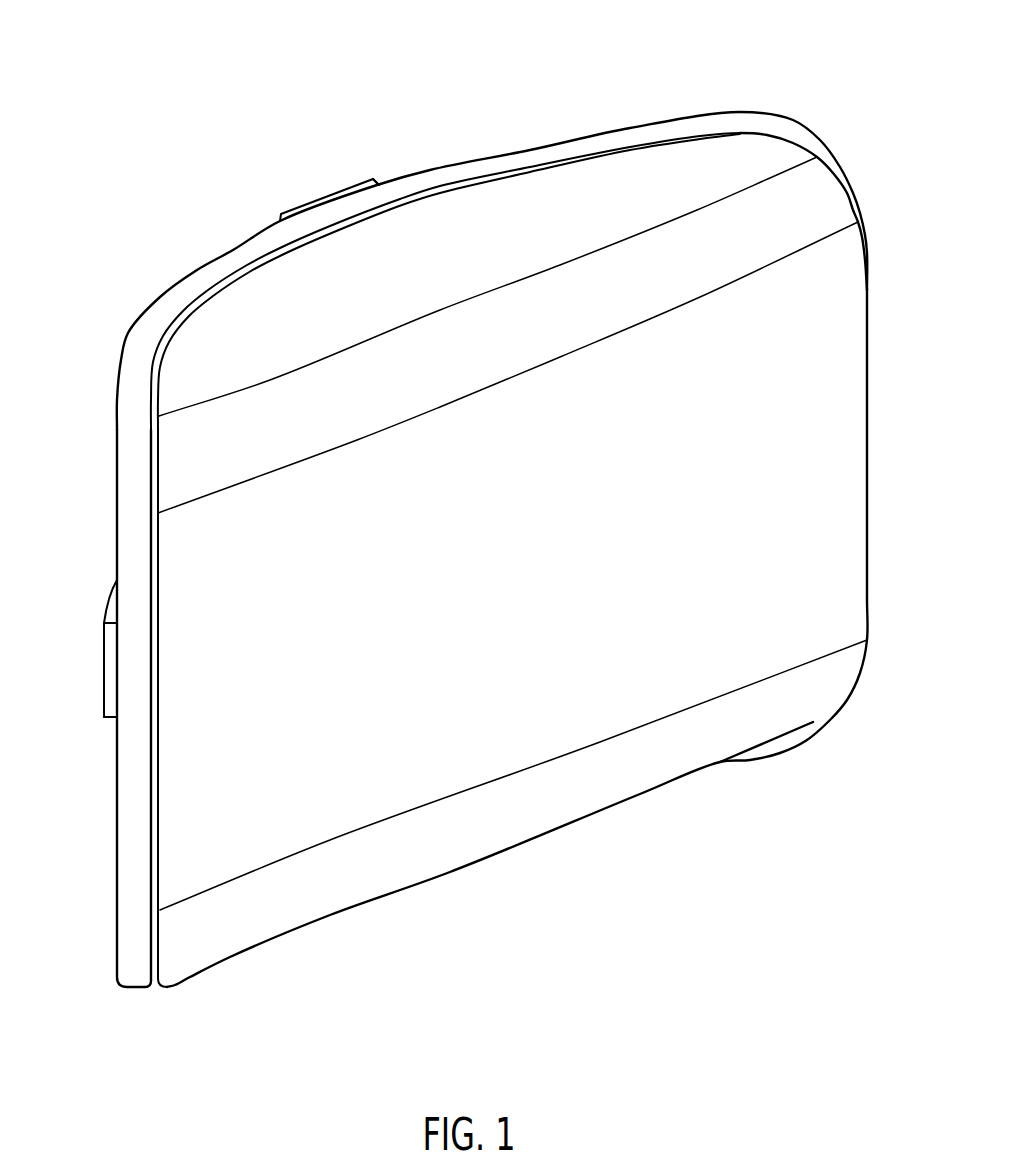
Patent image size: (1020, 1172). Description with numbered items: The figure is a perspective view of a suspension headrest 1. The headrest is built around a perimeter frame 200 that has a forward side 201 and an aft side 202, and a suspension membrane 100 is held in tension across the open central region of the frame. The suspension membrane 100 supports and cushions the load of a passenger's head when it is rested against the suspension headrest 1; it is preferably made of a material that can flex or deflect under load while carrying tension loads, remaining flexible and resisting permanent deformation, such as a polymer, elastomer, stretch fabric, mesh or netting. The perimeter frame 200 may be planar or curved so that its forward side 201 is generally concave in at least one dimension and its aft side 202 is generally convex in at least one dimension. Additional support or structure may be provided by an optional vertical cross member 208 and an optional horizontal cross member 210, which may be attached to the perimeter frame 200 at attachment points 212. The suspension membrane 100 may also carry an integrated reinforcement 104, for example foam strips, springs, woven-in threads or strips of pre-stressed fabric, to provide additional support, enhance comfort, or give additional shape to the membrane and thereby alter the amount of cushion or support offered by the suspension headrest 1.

The suspension headrest 1 is at (473, 503).
The suspension membrane 100 is at (529, 560).
The integrated reinforcement 104 is at (827, 188).
The perimeter frame 200 is at (457, 549).
The forward side 201 is at (276, 281).
The aft side 202 is at (213, 246).
The vertical cross member 208 is at (322, 205).
The horizontal cross member 210 is at (112, 655).
The attachment points 212 is at (373, 183).